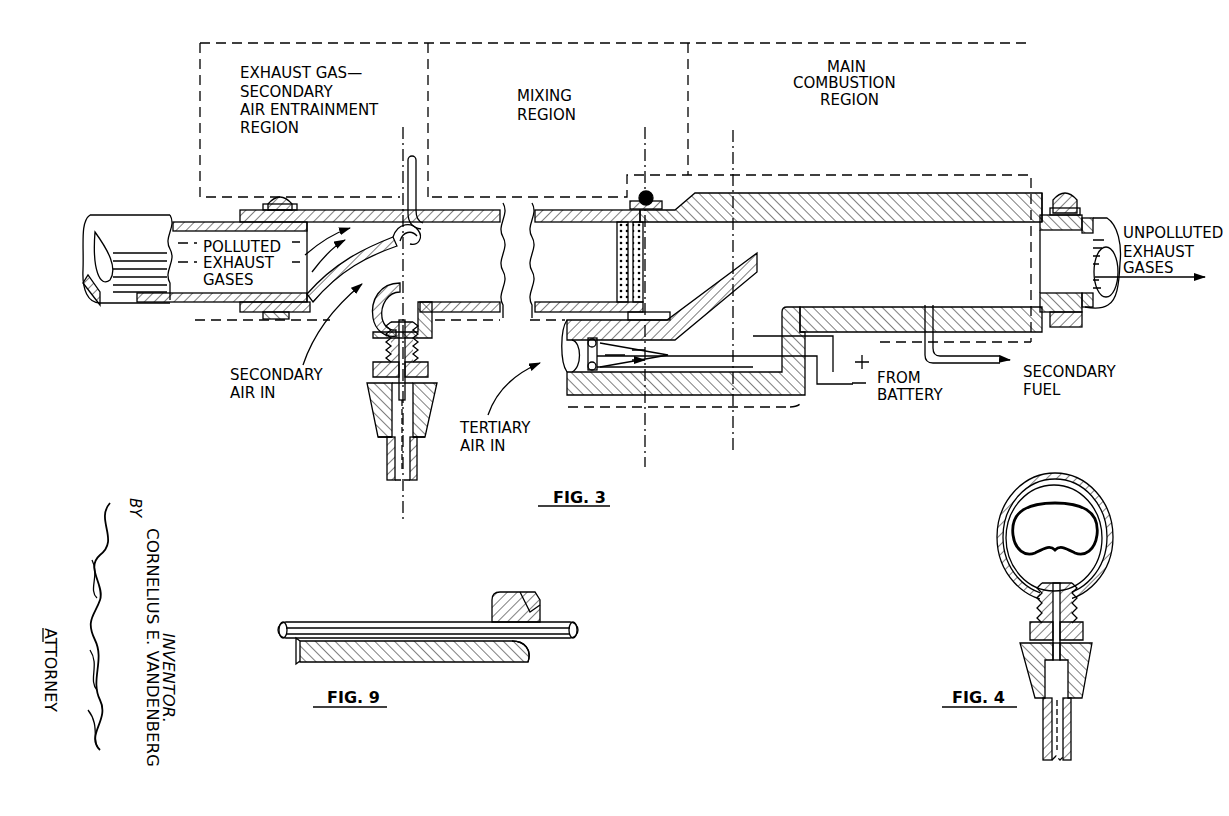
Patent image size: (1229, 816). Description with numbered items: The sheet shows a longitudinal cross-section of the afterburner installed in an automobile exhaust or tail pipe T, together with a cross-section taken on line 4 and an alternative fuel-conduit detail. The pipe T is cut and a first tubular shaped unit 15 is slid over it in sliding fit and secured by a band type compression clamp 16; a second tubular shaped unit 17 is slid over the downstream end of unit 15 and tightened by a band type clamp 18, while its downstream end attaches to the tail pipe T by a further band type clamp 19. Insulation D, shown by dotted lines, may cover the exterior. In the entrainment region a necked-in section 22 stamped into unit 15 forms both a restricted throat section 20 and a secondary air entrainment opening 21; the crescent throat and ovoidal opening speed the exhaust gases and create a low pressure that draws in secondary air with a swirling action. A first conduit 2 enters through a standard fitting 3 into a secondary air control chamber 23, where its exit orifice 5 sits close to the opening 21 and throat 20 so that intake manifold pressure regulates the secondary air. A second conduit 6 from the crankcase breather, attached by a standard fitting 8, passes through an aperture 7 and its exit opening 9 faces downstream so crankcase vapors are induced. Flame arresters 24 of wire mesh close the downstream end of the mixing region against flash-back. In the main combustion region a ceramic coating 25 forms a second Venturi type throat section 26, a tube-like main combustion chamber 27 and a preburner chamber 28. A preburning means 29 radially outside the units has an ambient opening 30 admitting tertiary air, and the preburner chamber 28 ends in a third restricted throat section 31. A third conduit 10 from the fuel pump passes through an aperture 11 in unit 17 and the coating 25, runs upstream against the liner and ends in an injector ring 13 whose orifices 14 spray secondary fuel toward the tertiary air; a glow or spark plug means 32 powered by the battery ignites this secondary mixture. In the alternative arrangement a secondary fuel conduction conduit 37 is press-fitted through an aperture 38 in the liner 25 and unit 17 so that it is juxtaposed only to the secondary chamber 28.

In FIG. 3, the first conduit 2 is at (413, 450).
In FIG. 4, the first conduit 2 is at (1068, 747).
In FIG. 3, the standard fitting 3 is at (428, 365).
In FIG. 4, the standard fitting 3 is at (1080, 622).
In FIG. 3, the section line 4— 4 is at (403, 154).
In FIG. 3, the exit orifice 5 is at (403, 322).
In FIG. 4, the exit orifice 5 is at (1053, 582).
In FIG. 3, the second conduit 6 is at (414, 171).
In FIG. 3, the aperture 7 is at (419, 207).
In FIG. 3, the standard fitting 8 is at (716, 147).
In FIG. 3, the exit opening 9 is at (427, 232).
In FIG. 3, the third conduit 10 is at (860, 307).
In FIG. 3, the aperture 11 is at (942, 304).
In FIG. 3, the injector ring 13 is at (574, 366).
In FIG. 3, the orifices 14 is at (648, 353).
In FIG. 3, the first tubular shaped unit 15 is at (463, 211).
In FIG. 4, the first tubular shaped unit 15 is at (1100, 487).
In FIG. 3, the band type compression clamp 16 is at (282, 203).
In FIG. 3, the second tubular shaped unit 17 is at (897, 193).
In FIG. 9, the second tubular shaped unit 17 is at (468, 657).
In FIG. 3, the band type clamp 18 is at (650, 192).
In FIG. 3, the band type clamp 19 is at (1082, 323).
In FIG. 3, the restricted throat section 20 is at (416, 228).
In FIG. 4, the restricted throat section 20 is at (1047, 490).
In FIG. 3, the secondary air entrainment opening 21 is at (403, 268).
In FIG. 4, the secondary air entrainment opening 21 is at (1063, 540).
In FIG. 3, the necked-in section 22 is at (322, 284).
In FIG. 4, the necked-in section 22 is at (1100, 553).
In FIG. 3, the secondary air control chamber 23 is at (433, 323).
In FIG. 3, the flame arresters 24 is at (618, 272).
In FIG. 3, the ceramic coating 25 is at (928, 223).
In FIG. 9, the ceramic coating 25 is at (513, 596).
In FIG. 3, the second Venturi type throat section 26 is at (766, 249).
In FIG. 3, the main combustion chamber 27 is at (860, 266).
In FIG. 3, the preburner chamber 28 is at (737, 336).
In FIG. 3, the preburning means 29 is at (800, 414).
In FIG. 3, the opening 30 is at (585, 344).
In FIG. 3, the third restricted throat section 31 is at (775, 305).
In FIG. 3, the glow or spark plug means 32 is at (757, 340).
In FIG. 9, the secondary fuel conduction conduit 37 is at (278, 623).
In FIG. 9, the aperture 38 is at (523, 645).
In FIG. 3, the exhaust or tail pipe T is at (128, 303).
In FIG. 3, the insulation D is at (820, 174).